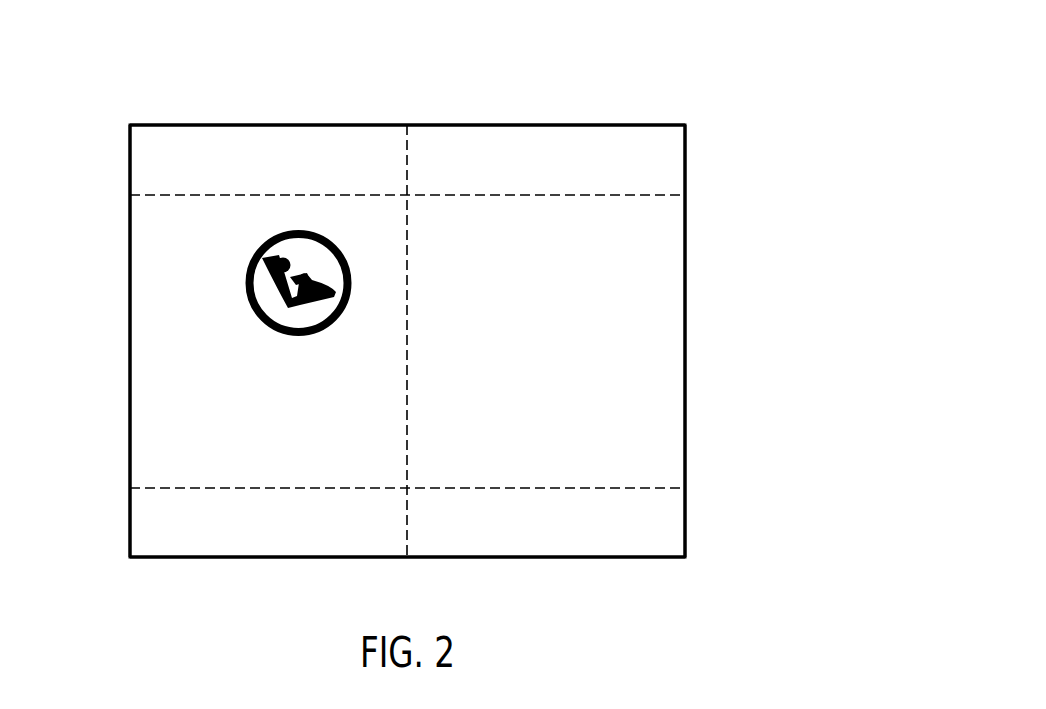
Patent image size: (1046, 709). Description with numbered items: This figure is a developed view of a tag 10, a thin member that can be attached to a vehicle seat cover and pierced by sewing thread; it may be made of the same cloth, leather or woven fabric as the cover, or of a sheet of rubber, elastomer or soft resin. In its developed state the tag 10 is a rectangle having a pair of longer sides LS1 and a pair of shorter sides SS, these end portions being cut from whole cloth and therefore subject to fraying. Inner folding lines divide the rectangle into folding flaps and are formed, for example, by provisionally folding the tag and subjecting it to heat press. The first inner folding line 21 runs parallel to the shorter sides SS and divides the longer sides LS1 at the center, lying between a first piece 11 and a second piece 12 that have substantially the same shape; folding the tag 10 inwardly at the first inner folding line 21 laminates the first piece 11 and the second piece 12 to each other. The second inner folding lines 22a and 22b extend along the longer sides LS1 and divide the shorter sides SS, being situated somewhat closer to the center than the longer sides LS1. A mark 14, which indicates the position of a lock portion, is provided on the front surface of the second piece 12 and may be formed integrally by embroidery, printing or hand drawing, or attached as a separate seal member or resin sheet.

The tag 10 is at (656, 80).
The first piece 11 is at (562, 458).
The second piece 12 is at (300, 460).
The mark 14 is at (224, 330).
The first inner folding line 21 is at (411, 352).
The second inner folding line 22a is at (543, 198).
The second inner folding line 22b is at (603, 485).
The longer side LS1 is at (541, 124).
The shorter side SS is at (129, 392).